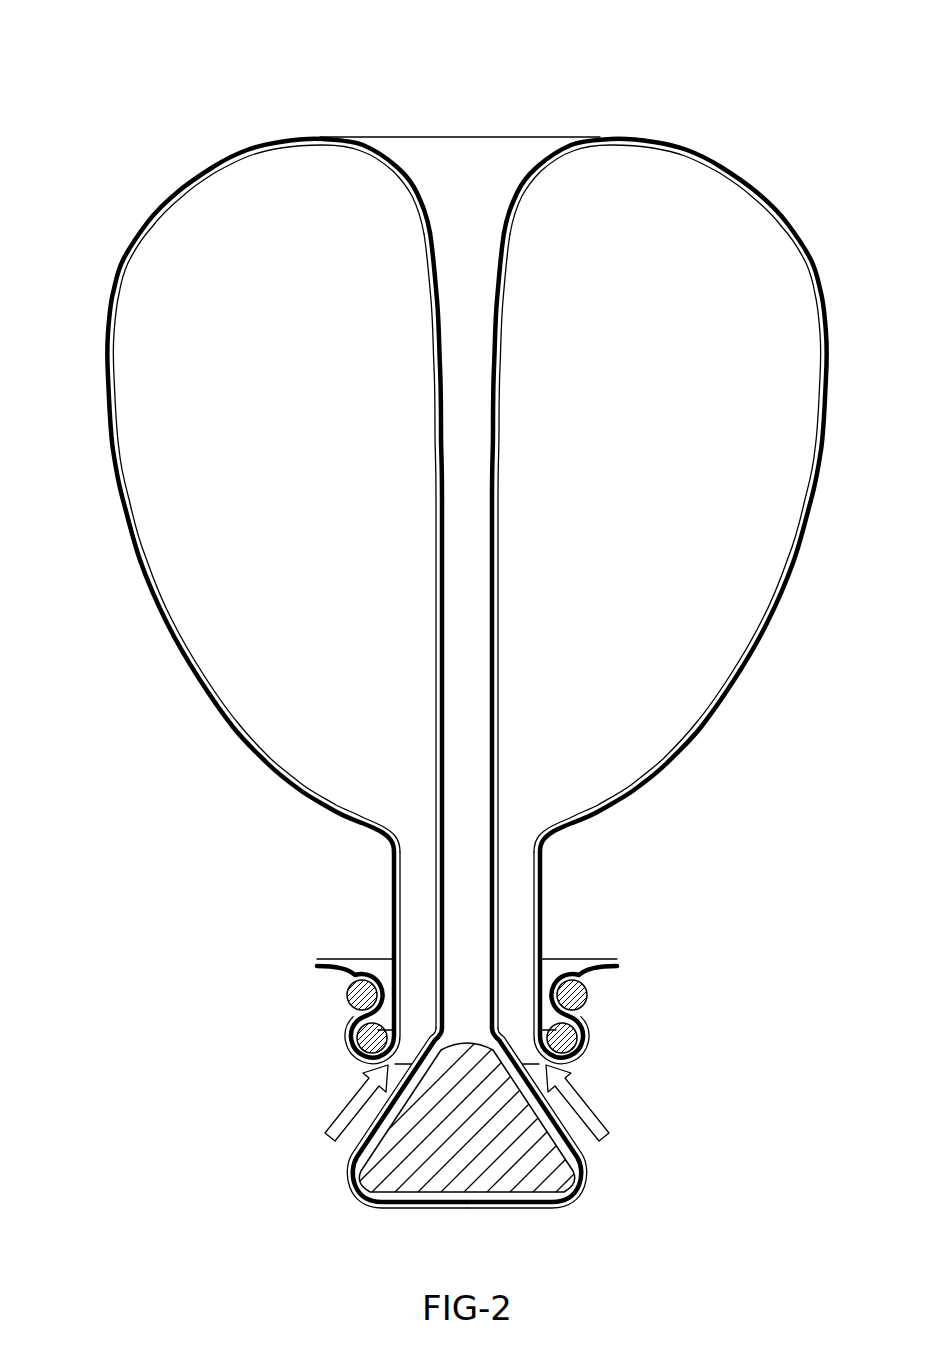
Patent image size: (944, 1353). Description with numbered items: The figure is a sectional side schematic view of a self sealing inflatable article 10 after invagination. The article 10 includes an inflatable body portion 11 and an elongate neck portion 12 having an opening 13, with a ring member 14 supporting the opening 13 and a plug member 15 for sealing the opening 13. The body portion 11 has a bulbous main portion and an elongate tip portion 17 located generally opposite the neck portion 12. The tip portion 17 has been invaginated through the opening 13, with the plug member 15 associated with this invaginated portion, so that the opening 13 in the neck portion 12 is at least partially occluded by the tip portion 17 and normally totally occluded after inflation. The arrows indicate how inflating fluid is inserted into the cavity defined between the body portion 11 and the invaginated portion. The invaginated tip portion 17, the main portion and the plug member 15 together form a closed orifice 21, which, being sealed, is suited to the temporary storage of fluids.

The self sealing inflatable article 10 is at (93, 456).
The inflatable body portion 11 is at (837, 148).
The neck portion 12 is at (750, 815).
The opening 13 is at (500, 923).
The ring member 14 is at (566, 1035).
The plug member 15 is at (408, 1143).
The elongate tip portion 17 is at (435, 648).
The closed orifice 21 is at (485, 135).